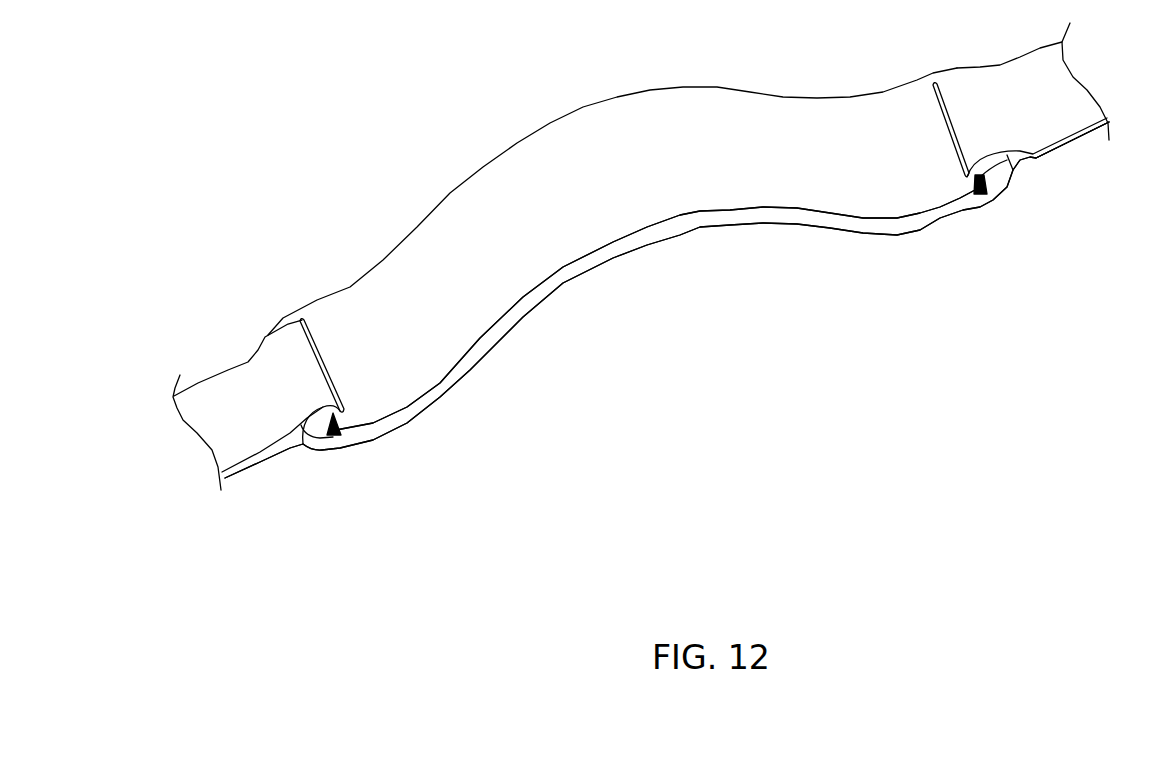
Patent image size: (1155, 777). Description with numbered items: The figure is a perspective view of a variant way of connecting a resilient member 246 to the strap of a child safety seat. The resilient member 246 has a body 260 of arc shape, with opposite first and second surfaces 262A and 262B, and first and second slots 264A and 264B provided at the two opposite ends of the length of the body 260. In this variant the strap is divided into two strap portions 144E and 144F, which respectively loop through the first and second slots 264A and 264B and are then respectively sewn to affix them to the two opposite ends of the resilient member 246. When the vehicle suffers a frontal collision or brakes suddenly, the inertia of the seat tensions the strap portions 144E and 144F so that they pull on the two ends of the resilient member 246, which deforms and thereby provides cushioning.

The strap portion 144E is at (238, 398).
The strap portion 144F is at (1004, 93).
The resilient member 246 is at (835, 260).
The body 260 is at (770, 217).
The first surface 262A is at (537, 307).
The second surface 262B is at (558, 262).
The first slot 264A is at (335, 440).
The second slot 264B is at (982, 197).